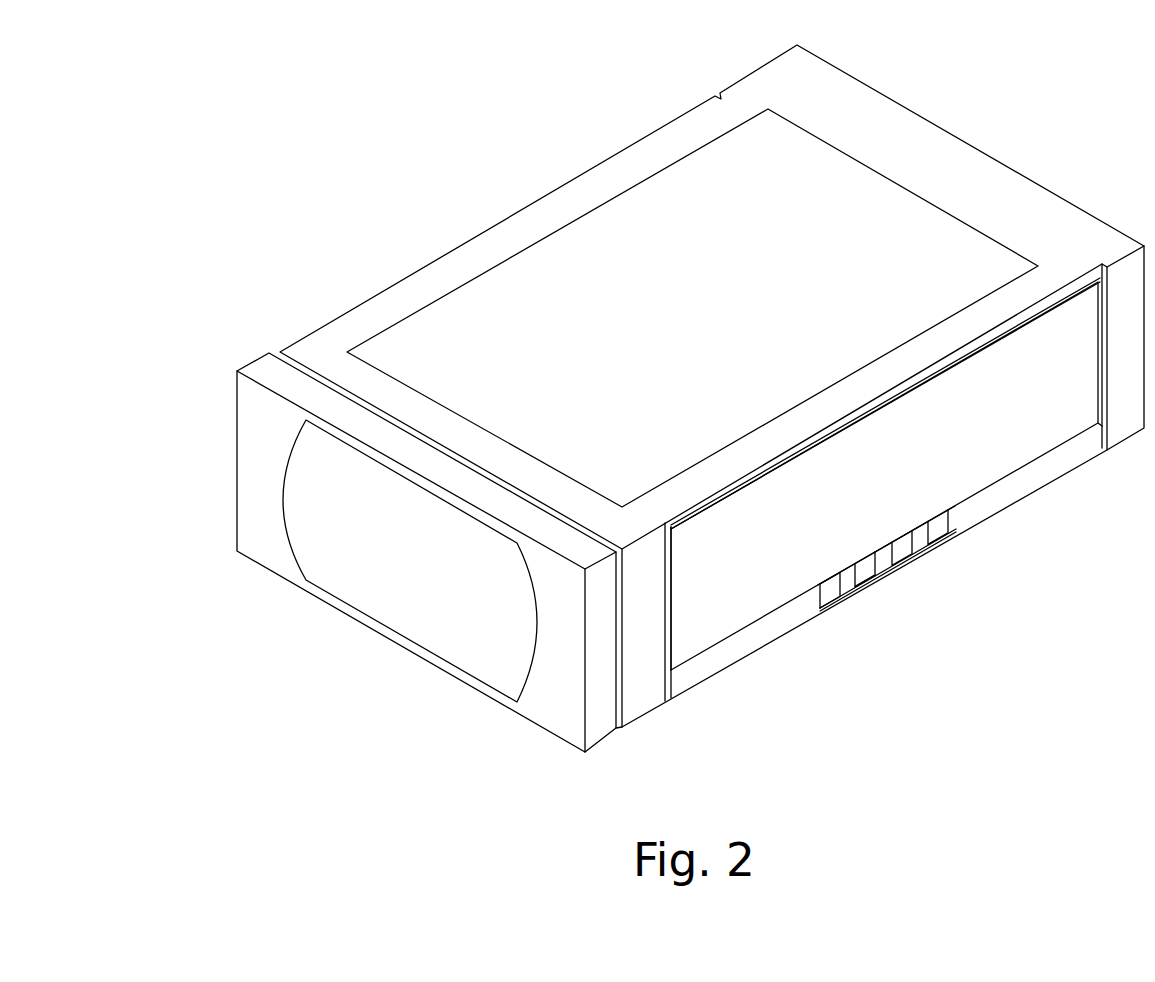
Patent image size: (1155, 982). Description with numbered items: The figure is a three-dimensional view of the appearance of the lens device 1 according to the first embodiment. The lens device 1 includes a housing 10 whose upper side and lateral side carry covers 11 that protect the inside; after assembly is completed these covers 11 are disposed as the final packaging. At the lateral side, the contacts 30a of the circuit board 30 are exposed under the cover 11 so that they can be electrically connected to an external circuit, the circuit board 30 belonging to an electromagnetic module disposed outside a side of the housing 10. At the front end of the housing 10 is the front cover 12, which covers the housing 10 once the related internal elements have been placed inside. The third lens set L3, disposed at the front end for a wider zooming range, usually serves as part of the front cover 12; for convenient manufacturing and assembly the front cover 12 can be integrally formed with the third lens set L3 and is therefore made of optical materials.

The lens device 1 is at (177, 63).
The housing 10 is at (555, 205).
The cover 11 is at (498, 302).
The front cover 12 is at (249, 471).
The third lens set L3 is at (397, 608).
The circuit board 30 is at (743, 640).
The contacts 30a is at (930, 517).